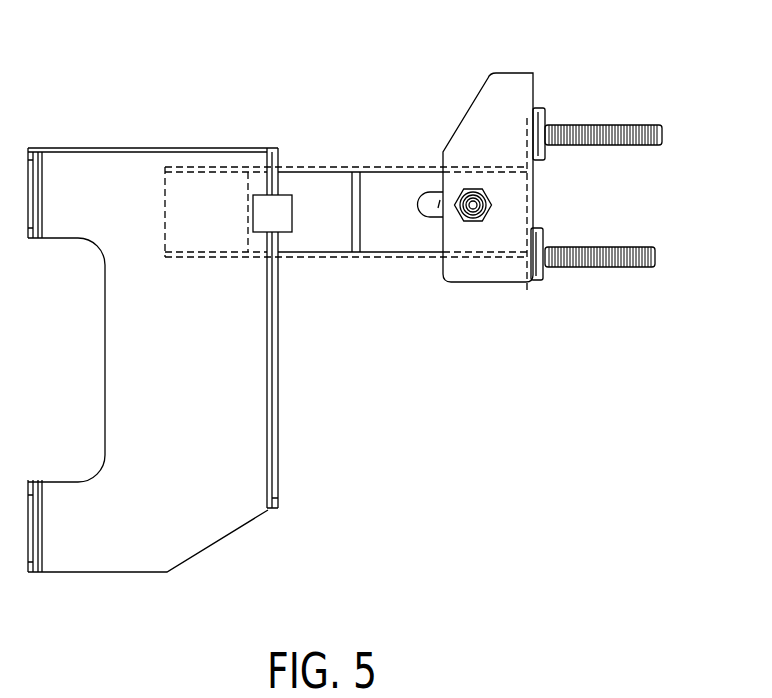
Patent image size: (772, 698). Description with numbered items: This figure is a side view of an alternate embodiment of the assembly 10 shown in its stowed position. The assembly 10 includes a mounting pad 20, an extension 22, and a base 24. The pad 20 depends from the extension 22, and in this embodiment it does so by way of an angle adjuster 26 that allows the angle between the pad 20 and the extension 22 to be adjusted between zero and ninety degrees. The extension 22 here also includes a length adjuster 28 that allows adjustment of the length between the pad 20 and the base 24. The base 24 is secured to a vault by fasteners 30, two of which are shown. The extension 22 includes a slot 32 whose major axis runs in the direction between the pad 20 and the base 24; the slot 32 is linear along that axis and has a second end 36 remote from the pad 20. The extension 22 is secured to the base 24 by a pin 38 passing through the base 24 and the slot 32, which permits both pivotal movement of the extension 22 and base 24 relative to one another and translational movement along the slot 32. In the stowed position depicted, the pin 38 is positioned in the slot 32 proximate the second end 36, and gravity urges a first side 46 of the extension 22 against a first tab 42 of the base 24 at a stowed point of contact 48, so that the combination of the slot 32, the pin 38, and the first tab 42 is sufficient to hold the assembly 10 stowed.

The assembly 10 is at (422, 533).
The mounting pad 20 is at (110, 552).
The extension 22 is at (317, 198).
The base 24 is at (513, 87).
The angle adjuster 26 is at (273, 218).
The length adjuster 28 is at (356, 253).
The fasteners 30 is at (662, 145).
The slot 32 is at (438, 210).
The second end 36 is at (420, 212).
The pin 38 is at (480, 220).
The first tab 42 is at (538, 165).
The first side 46 is at (423, 167).
The stowed point of contact 48 is at (505, 159).